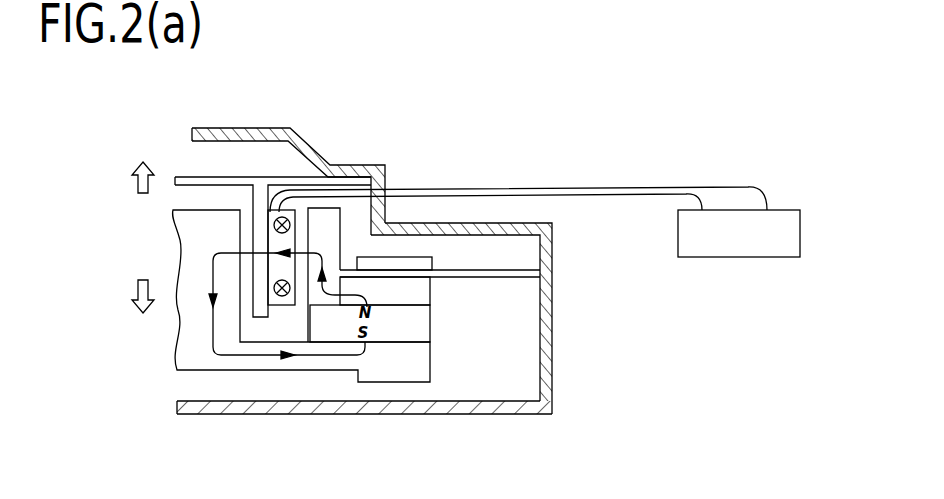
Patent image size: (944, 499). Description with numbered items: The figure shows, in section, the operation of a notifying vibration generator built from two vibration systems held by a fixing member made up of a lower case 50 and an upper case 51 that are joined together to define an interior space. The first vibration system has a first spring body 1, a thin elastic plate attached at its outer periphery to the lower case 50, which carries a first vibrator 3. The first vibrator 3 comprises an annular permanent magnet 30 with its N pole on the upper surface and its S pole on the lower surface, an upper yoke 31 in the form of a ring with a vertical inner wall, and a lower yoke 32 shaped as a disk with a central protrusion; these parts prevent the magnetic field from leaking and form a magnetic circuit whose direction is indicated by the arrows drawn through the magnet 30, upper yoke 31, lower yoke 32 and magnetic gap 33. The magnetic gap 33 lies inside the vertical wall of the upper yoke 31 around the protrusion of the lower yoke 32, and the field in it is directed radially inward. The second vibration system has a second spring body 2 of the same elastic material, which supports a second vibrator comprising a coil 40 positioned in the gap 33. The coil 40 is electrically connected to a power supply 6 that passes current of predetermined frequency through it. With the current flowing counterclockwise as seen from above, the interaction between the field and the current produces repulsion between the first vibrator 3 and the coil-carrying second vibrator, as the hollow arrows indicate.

The first spring body 1 is at (503, 272).
The second spring body 2 is at (305, 178).
The first vibrator 3 is at (438, 353).
The power supply 6 is at (725, 257).
The permanent magnet 30 is at (413, 328).
The upper yoke 31 is at (418, 295).
The lower yoke 32 is at (203, 357).
The magnetic gap 33 is at (302, 295).
The coil 40 is at (275, 240).
The lower case 50 is at (340, 414).
The upper case 51 is at (268, 130).